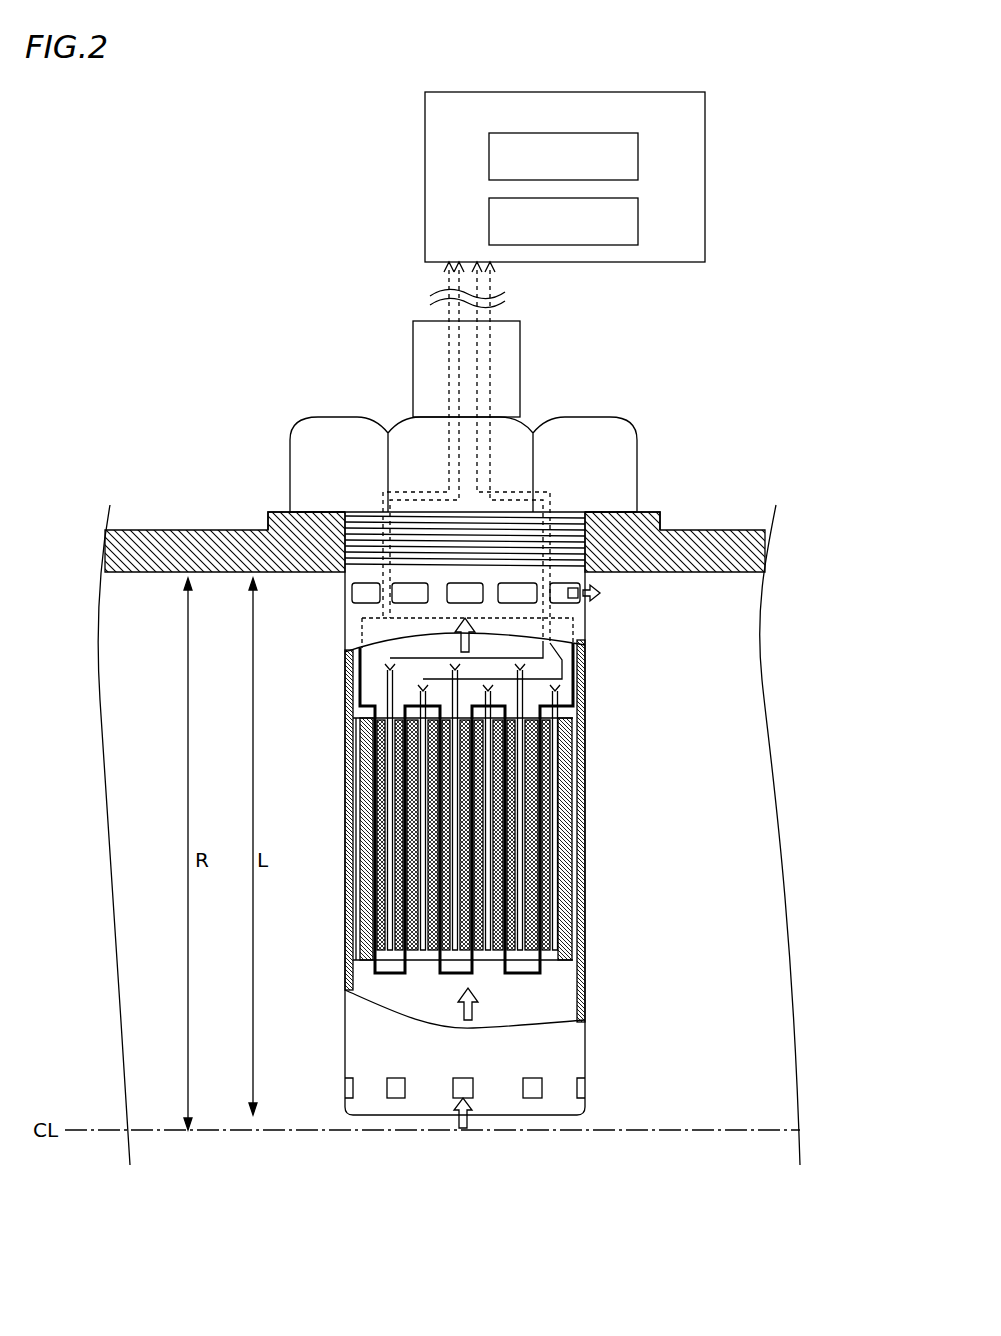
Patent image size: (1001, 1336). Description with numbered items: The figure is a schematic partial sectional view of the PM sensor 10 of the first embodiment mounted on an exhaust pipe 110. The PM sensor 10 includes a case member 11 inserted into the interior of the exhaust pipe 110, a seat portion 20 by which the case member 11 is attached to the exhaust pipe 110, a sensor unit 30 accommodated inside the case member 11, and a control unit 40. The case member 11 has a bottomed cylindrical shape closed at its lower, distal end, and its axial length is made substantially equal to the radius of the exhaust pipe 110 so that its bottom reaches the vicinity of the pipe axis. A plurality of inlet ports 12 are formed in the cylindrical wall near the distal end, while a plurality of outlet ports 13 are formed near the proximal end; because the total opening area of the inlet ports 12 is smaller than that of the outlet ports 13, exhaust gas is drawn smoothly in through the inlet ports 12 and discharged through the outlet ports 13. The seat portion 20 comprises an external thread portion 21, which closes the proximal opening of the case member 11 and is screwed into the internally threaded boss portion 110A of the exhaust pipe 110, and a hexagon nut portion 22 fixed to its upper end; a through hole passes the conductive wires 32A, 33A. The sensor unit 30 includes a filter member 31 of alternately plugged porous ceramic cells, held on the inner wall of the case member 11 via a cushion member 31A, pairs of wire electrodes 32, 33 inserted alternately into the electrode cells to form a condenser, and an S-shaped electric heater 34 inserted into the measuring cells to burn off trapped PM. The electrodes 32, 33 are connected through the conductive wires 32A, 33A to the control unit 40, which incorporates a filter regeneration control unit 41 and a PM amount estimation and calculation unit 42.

The PM sensor 10 is at (348, 352).
The case member 11 is at (570, 1052).
The inlet ports 12 is at (402, 1088).
The outlet ports 13 is at (345, 592).
The seat portion 20 is at (502, 484).
The external thread portion 21 is at (586, 520).
The nut portion 22 is at (588, 515).
The sensor unit 30 is at (517, 815).
The filter member 31 is at (585, 842).
The electrode 32 is at (556, 870).
The electrode 33 is at (585, 900).
The cushion member 31A is at (585, 763).
The conductive wire 32A is at (590, 645).
The conductive wire 33A is at (590, 675).
The electric heater 34 is at (560, 978).
The control unit 40 is at (601, 177).
The filter regeneration control unit 41 is at (552, 166).
The PM amount estimation and calculation unit 42 is at (552, 232).
The exhaust pipe 110 is at (170, 530).
The boss portion 110A is at (285, 512).